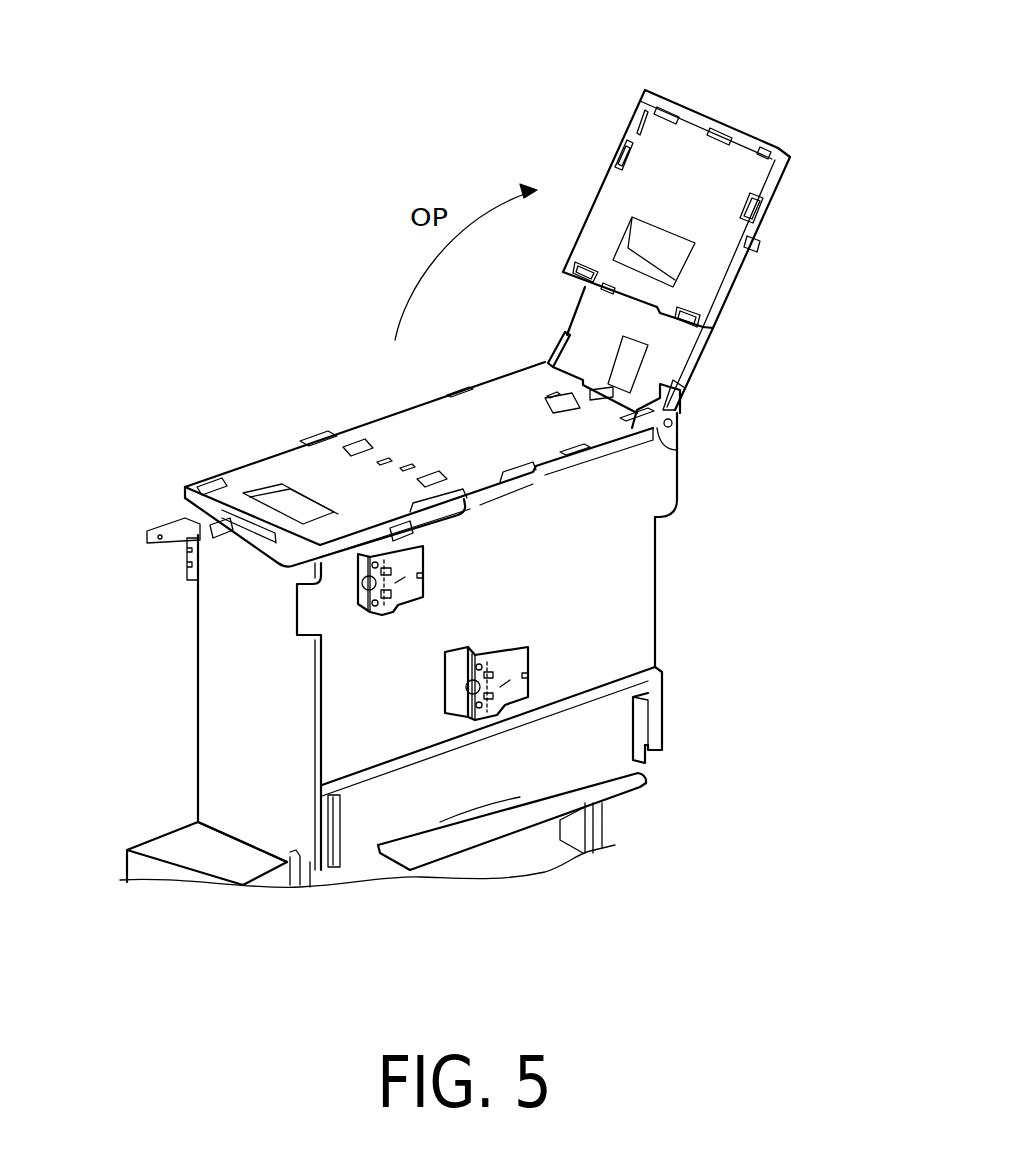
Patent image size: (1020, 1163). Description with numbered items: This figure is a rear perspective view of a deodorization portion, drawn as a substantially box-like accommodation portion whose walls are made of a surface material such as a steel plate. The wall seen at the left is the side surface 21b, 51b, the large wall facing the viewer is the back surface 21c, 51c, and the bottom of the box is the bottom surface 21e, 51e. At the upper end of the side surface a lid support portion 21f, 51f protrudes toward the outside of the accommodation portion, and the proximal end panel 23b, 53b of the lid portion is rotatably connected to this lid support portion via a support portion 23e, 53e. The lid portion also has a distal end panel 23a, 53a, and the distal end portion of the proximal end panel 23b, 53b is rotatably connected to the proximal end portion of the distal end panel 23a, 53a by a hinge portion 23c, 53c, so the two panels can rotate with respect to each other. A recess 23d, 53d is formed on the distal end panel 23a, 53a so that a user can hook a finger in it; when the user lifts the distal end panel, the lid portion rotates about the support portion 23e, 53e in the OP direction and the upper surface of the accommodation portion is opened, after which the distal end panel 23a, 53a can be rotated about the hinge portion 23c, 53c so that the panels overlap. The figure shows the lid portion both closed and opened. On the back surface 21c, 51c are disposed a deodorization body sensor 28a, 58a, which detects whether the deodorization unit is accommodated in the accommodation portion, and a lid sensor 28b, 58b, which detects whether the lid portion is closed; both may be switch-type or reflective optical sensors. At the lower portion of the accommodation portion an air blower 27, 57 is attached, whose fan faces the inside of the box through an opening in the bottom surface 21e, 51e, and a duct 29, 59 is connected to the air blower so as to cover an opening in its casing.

The distal end panel 23a is at (532, 328).
The distal end panel 53a is at (702, 275).
The proximal end panel 23b is at (642, 354).
The proximal end panel 53b is at (673, 347).
The hinge portion 23c is at (577, 220).
The hinge portion 53c is at (743, 123).
The recess 23d is at (398, 277).
The recess 53d is at (663, 207).
The support portion 23e is at (749, 408).
The support portion 53e is at (675, 425).
The side surface 21b is at (177, 702).
The side surface 51b is at (240, 662).
The back surface 21c is at (552, 641).
The back surface 51c is at (630, 600).
The bottom surface 21e is at (745, 713).
The bottom surface 51e is at (663, 665).
The lid support portion 21f is at (731, 436).
The lid support portion 51f is at (658, 432).
The first air blower 27 is at (523, 768).
The second air blower 57 is at (612, 838).
The first deodorization body sensor 28a is at (626, 665).
The second deodorization body sensor 58a is at (520, 665).
The first lid sensor 28b is at (374, 747).
The second lid sensor 58b is at (410, 597).
The duct 29 is at (367, 900).
The duct 59 is at (218, 868).